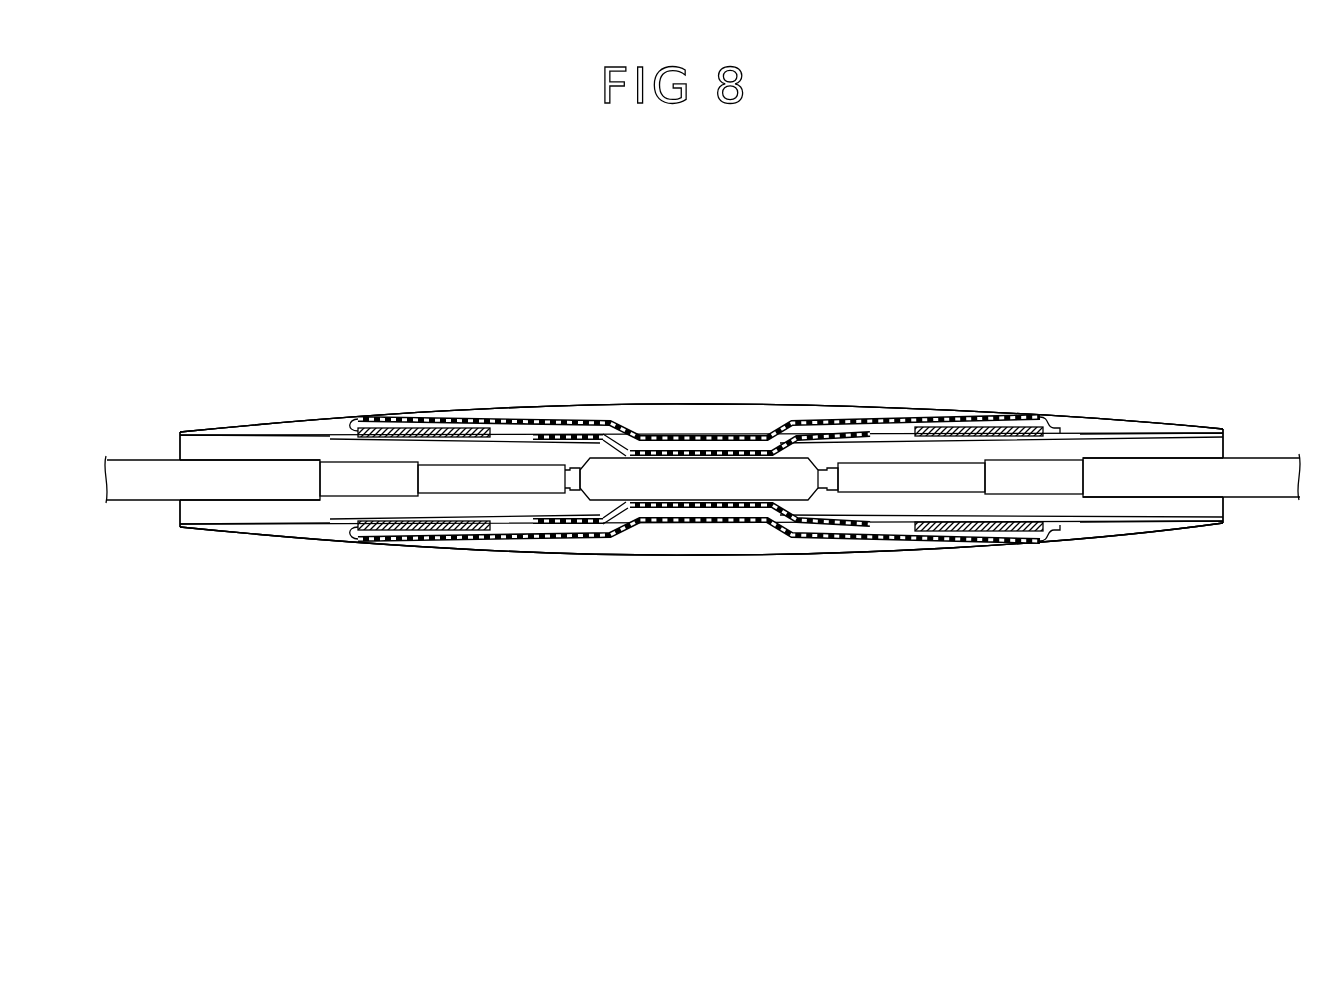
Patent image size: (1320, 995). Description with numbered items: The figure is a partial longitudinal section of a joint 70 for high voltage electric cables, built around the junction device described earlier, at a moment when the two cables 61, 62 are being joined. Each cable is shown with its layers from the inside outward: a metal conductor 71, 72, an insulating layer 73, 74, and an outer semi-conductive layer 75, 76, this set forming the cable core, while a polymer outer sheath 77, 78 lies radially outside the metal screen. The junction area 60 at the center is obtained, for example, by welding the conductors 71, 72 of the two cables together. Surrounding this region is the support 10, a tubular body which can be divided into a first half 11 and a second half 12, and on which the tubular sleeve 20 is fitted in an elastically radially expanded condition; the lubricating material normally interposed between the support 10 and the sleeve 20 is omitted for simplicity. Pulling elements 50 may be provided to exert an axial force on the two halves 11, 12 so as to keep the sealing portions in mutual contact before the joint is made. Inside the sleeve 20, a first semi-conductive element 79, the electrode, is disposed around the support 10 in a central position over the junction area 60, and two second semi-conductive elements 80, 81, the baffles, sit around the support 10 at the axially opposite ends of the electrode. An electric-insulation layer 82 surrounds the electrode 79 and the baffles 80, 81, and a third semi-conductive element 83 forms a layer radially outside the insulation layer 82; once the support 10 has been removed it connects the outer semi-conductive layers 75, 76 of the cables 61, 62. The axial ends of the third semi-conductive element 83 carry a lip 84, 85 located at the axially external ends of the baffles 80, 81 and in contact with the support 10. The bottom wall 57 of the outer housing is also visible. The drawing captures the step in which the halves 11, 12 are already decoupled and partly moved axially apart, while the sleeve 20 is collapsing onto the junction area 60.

The support 10 is at (1129, 373).
The first half of the support 11 is at (1157, 432).
The second half of the support 12 is at (247, 432).
The tubular sleeve 20 is at (775, 394).
The pulling elements 50 is at (295, 432).
The housing bottom wall 57 is at (447, 551).
The junction area 60 is at (603, 502).
The first electric cable 61 is at (130, 512).
The second electric cable 62 is at (1272, 509).
The joint 70 is at (462, 224).
The metal conductor of the first cable 71 is at (573, 488).
The metal conductor of the second cable 72 is at (833, 492).
The insulating layer of the first cable 73 is at (493, 485).
The insulating layer of the second cable 74 is at (902, 478).
The outer semi-conductive layer of the first cable 75 is at (343, 485).
The outer semi-conductive layer of the second cable 76 is at (1062, 480).
The outer sheath of the first cable 77 is at (227, 485).
The outer sheath of the second cable 78 is at (1160, 478).
The first semi-conductive element 79 is at (678, 440).
The second semi-conductive element 80 is at (426, 432).
The second semi-conductive element 81 is at (984, 430).
The electric-insulation layer 82 is at (578, 435).
The third semi-conductive element 83 is at (523, 419).
The lip 84 is at (352, 411).
The lip 85 is at (1058, 404).